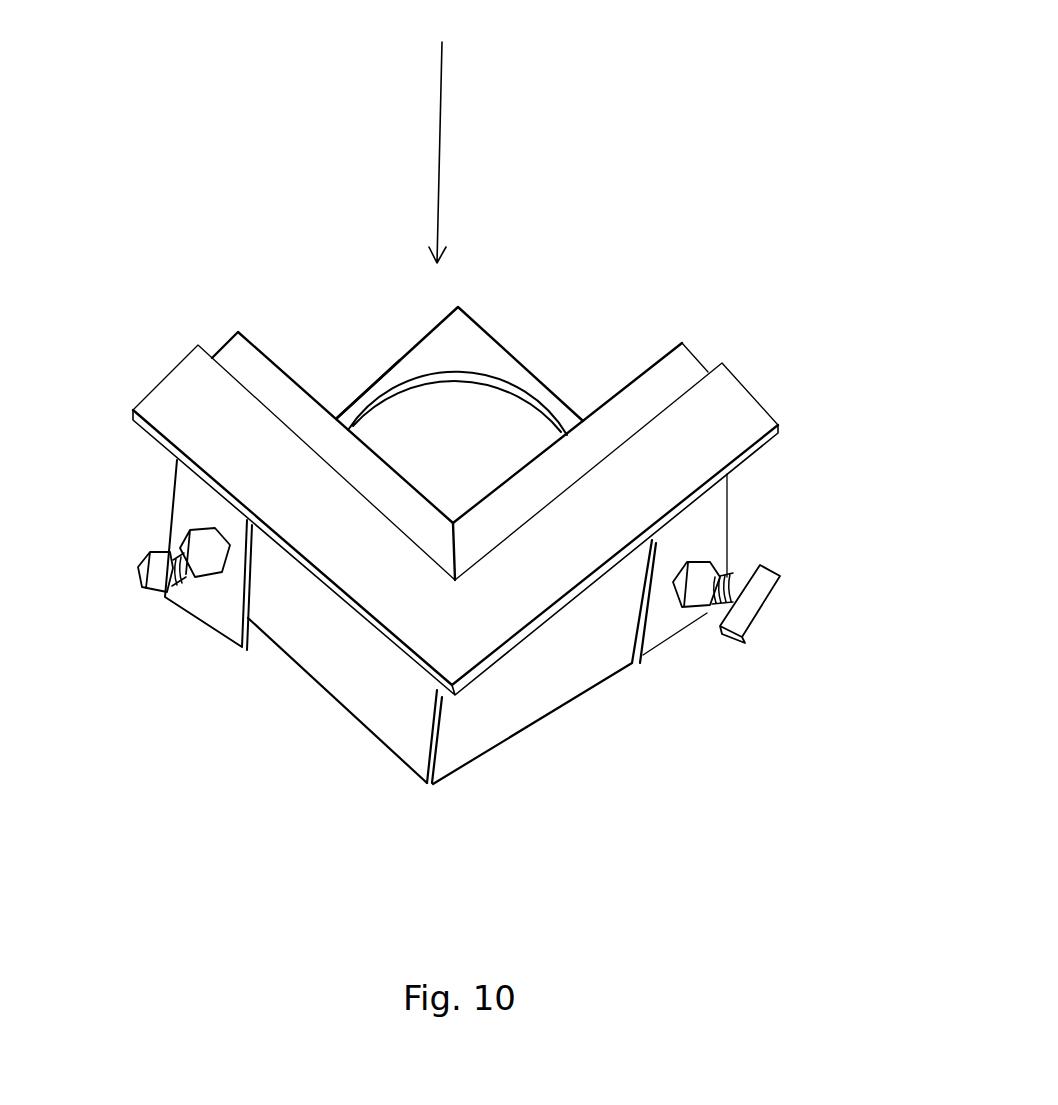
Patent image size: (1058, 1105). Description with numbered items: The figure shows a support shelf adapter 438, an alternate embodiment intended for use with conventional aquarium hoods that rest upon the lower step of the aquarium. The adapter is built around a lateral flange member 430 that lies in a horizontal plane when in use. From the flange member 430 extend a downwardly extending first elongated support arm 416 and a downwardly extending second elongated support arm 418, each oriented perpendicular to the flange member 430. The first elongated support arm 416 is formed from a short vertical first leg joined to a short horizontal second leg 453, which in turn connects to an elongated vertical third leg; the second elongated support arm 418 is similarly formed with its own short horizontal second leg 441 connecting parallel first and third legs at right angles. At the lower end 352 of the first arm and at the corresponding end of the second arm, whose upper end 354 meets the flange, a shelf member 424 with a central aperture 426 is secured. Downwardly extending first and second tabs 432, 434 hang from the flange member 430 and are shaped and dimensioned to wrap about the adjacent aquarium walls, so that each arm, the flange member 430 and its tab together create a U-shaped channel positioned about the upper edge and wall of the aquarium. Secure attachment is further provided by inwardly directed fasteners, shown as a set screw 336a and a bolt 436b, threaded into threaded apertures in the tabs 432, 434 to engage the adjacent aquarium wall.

The support shelf adapter 438 is at (450, 138).
The short horizontal second leg 453 is at (637, 415).
The short horizontal second leg 441 is at (243, 363).
The shelf member 424 is at (363, 385).
The central aperture 426 is at (505, 383).
The downwardly extending first tab 432 is at (708, 520).
The set screw 336a is at (730, 567).
The bolt 436b is at (163, 600).
The downwardly extending second tab 434 is at (228, 612).
The downwardly extending second elongated support arm 418 is at (335, 687).
The downwardly extending first elongated support arm 416 is at (532, 680).
The lower end 352 is at (375, 740).
The upper end 354 is at (460, 763).
The lateral flange member 430 is at (538, 580).